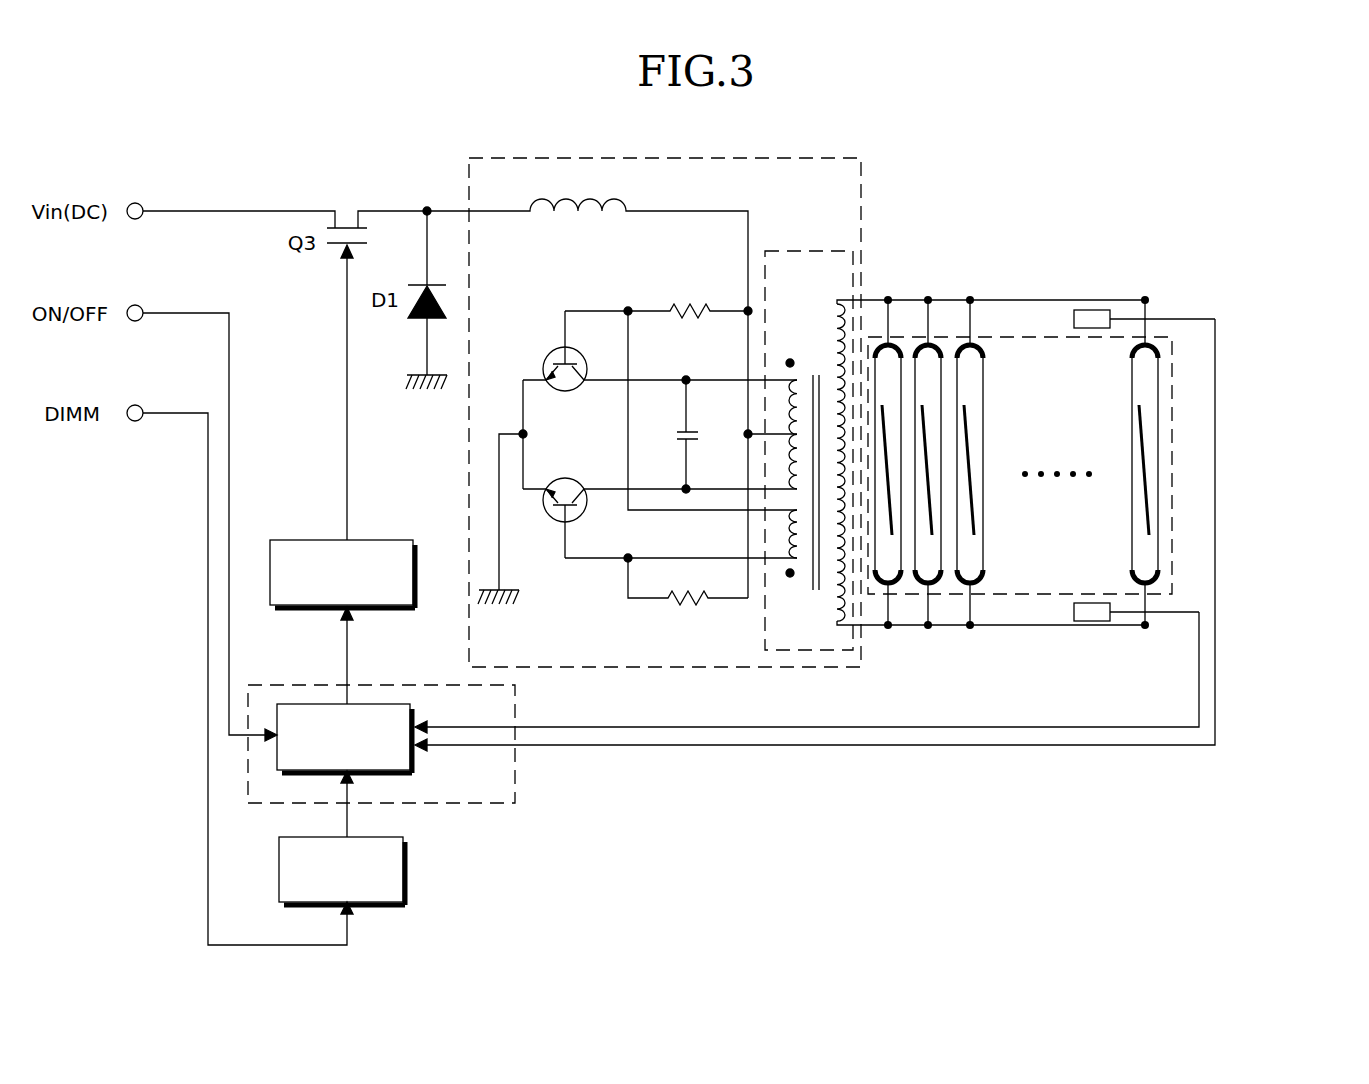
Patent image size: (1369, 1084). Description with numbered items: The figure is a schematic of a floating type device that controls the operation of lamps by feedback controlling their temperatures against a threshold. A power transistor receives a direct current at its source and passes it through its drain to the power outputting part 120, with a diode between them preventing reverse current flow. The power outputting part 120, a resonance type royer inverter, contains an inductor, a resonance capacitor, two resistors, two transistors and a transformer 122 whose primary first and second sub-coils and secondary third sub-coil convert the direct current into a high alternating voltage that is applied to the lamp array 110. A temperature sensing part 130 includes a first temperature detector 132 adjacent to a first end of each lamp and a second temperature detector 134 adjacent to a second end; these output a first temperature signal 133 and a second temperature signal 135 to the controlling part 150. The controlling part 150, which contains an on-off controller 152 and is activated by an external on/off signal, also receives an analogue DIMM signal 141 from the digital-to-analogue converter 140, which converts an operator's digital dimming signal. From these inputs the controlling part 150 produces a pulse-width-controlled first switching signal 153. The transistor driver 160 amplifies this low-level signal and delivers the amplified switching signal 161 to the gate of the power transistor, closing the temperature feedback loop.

The lamp array 110 is at (1042, 337).
The power outputting part 120 is at (786, 412).
The transformer 122 is at (793, 252).
The temperature sensing part 130 is at (892, 546).
The first temperature detector 132 is at (1092, 320).
The first temperature signal 133 is at (965, 747).
The second temperature detector 134 is at (1092, 620).
The second temperature signal 135 is at (966, 727).
The digital-to-analogue converter 140 is at (407, 880).
The analogue DIMM signal 141 is at (347, 820).
The controlling part 150 is at (515, 790).
The on-off controller 152 is at (415, 718).
The first switching signal 153 is at (347, 660).
The transistor driver 160 is at (378, 540).
The amplified switching signal 161 is at (347, 405).